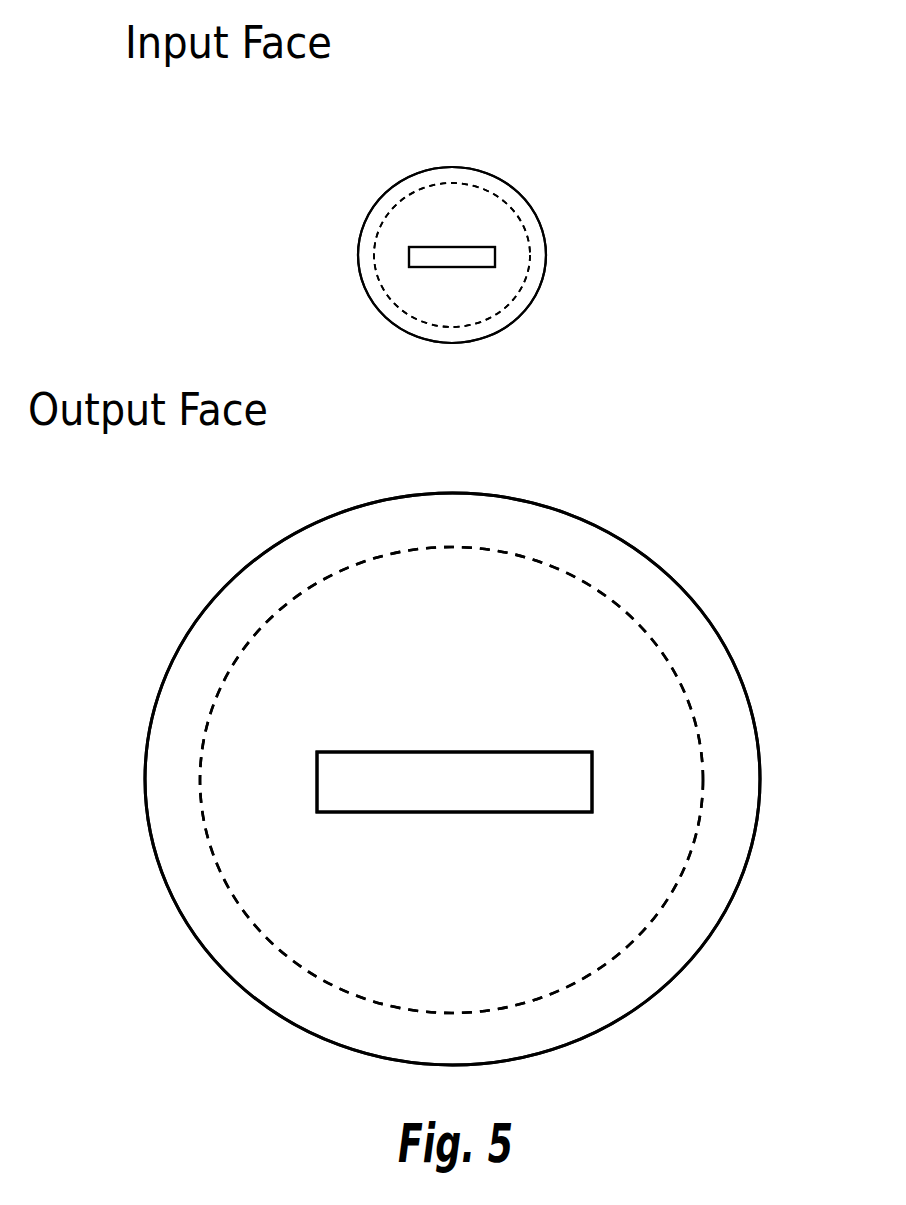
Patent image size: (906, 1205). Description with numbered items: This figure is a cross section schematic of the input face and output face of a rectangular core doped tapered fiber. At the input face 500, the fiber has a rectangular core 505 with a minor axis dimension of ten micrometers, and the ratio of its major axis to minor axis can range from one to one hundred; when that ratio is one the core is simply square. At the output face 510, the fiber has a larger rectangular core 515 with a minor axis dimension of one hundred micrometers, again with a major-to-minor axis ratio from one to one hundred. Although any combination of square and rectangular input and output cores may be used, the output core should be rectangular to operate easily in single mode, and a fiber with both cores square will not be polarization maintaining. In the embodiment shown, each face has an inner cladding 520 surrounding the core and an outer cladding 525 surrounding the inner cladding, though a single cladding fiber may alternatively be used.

The input face 500 is at (378, 207).
The rectangular core 505 is at (462, 253).
The output face 510 is at (440, 750).
The rectangular core 515 is at (452, 782).
The inner cladding 520 is at (462, 297).
The outer cladding 525 is at (453, 177).